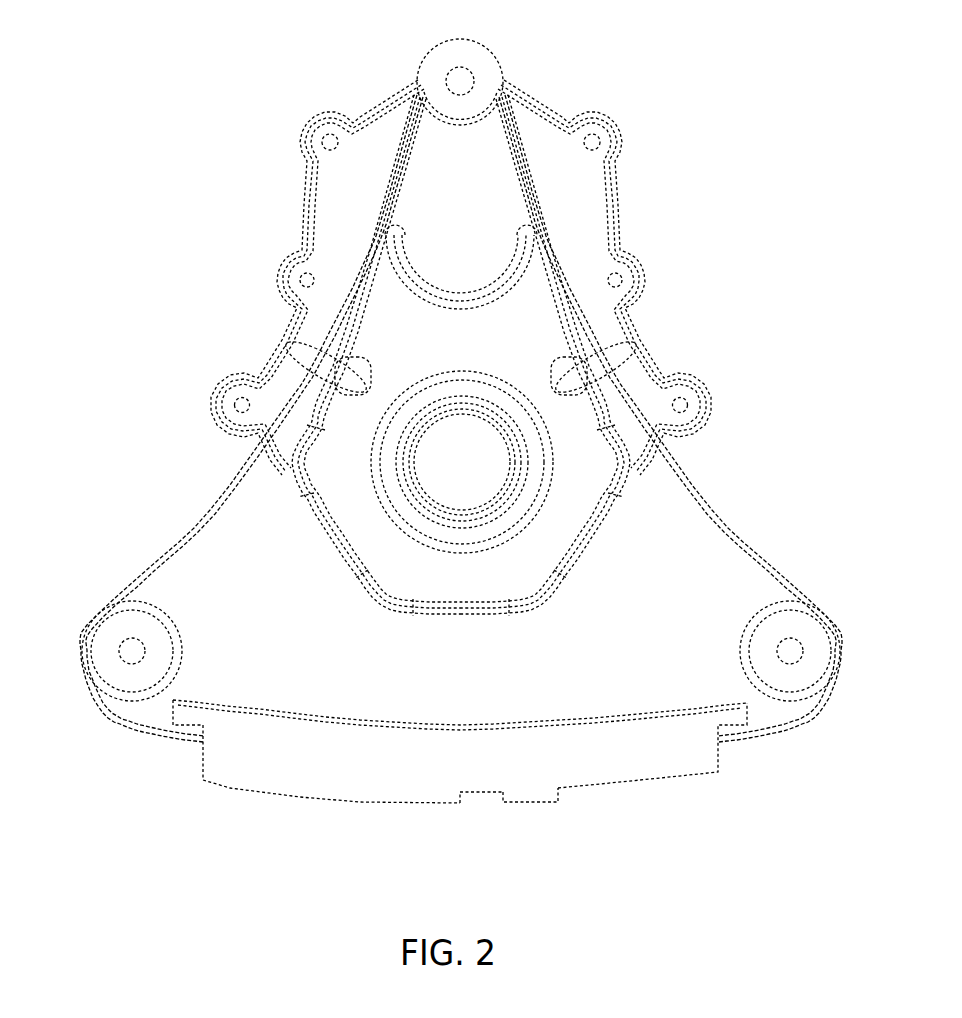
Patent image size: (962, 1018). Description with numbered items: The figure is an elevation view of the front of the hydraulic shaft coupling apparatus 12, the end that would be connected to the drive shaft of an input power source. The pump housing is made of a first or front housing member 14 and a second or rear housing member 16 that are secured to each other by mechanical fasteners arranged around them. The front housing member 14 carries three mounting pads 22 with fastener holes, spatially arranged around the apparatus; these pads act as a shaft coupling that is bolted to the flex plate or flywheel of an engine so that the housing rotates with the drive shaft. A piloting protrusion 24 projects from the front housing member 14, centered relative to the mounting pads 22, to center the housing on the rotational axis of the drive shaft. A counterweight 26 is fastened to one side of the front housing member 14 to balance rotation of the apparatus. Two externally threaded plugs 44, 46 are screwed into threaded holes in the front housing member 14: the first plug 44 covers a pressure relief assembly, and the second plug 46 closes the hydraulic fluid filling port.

The hydraulic shaft coupling apparatus 12 is at (571, 75).
The first or front housing member 14 is at (632, 400).
The second or rear housing member 16 is at (653, 323).
The mounting pads 22 is at (468, 52).
The piloting protrusion 24 is at (493, 483).
The counterweight 26 is at (628, 770).
The first plug 44 is at (530, 803).
The second plug 46 is at (397, 803).